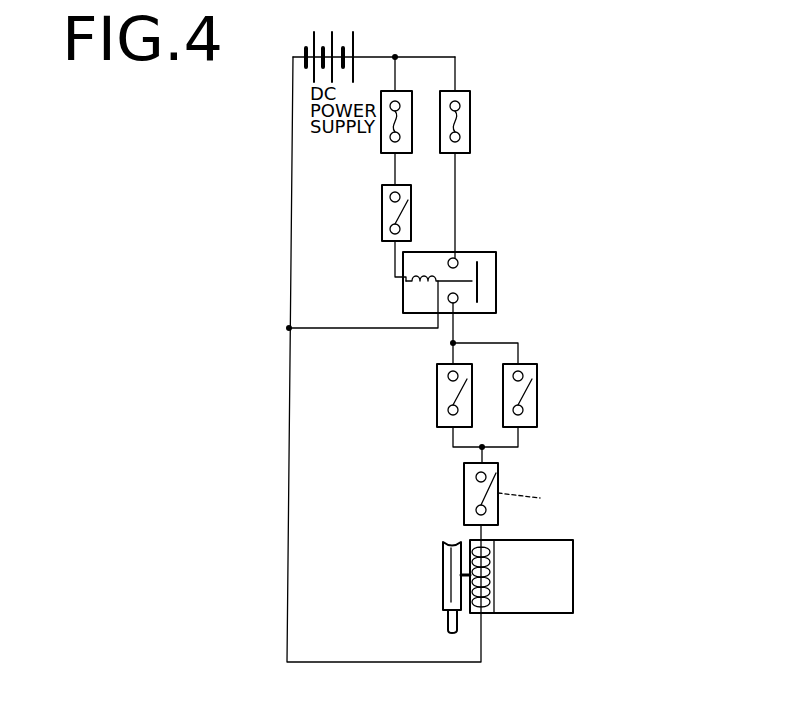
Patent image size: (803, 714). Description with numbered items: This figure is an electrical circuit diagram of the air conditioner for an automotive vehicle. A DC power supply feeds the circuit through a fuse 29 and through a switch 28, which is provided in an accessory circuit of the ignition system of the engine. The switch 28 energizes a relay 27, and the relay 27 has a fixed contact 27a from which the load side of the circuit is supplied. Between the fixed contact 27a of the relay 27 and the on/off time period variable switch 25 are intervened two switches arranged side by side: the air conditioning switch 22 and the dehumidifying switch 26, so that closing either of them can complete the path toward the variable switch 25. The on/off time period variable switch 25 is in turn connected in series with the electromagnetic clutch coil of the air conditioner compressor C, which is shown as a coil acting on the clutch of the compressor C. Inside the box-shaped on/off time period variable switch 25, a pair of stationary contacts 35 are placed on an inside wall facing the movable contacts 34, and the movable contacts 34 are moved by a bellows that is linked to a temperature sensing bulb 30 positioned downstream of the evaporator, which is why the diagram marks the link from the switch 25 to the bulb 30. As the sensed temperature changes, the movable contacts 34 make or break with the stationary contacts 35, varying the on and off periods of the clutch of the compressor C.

The fuse 29 is at (412, 94).
The switch 28 is at (382, 218).
The relay 27 is at (496, 278).
The fixed contact 27a is at (457, 259).
The dehumidifying switch 26 is at (437, 399).
The air conditioning switch 22 is at (537, 375).
The on/off time period variable switch 25 is at (498, 475).
The movable contacts 34 is at (492, 499).
The stationary contacts 35 is at (476, 477).
The temperature sensing bulb 30 is at (546, 496).
The compressor C is at (573, 579).